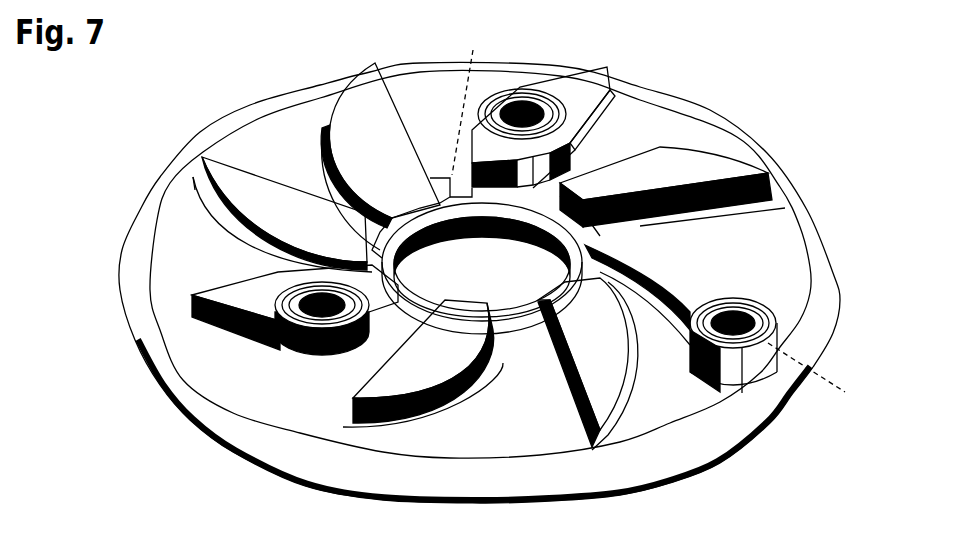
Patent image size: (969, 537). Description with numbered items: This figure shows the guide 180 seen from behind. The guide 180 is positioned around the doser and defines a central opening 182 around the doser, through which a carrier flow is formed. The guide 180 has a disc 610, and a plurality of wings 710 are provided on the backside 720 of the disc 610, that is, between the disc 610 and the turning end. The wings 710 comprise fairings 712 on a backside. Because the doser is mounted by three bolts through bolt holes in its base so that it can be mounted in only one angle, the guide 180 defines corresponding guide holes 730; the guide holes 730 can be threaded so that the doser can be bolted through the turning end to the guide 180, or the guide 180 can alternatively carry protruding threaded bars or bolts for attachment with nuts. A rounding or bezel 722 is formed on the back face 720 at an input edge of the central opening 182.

The guide 180 is at (398, 45).
The central opening 182 is at (482, 281).
The disc 610 is at (234, 75).
The wings 710 is at (223, 180).
The fairings 712 is at (212, 213).
The backside 720 is at (413, 264).
The bezel 722 is at (298, 268).
The guide holes 730 is at (238, 354).